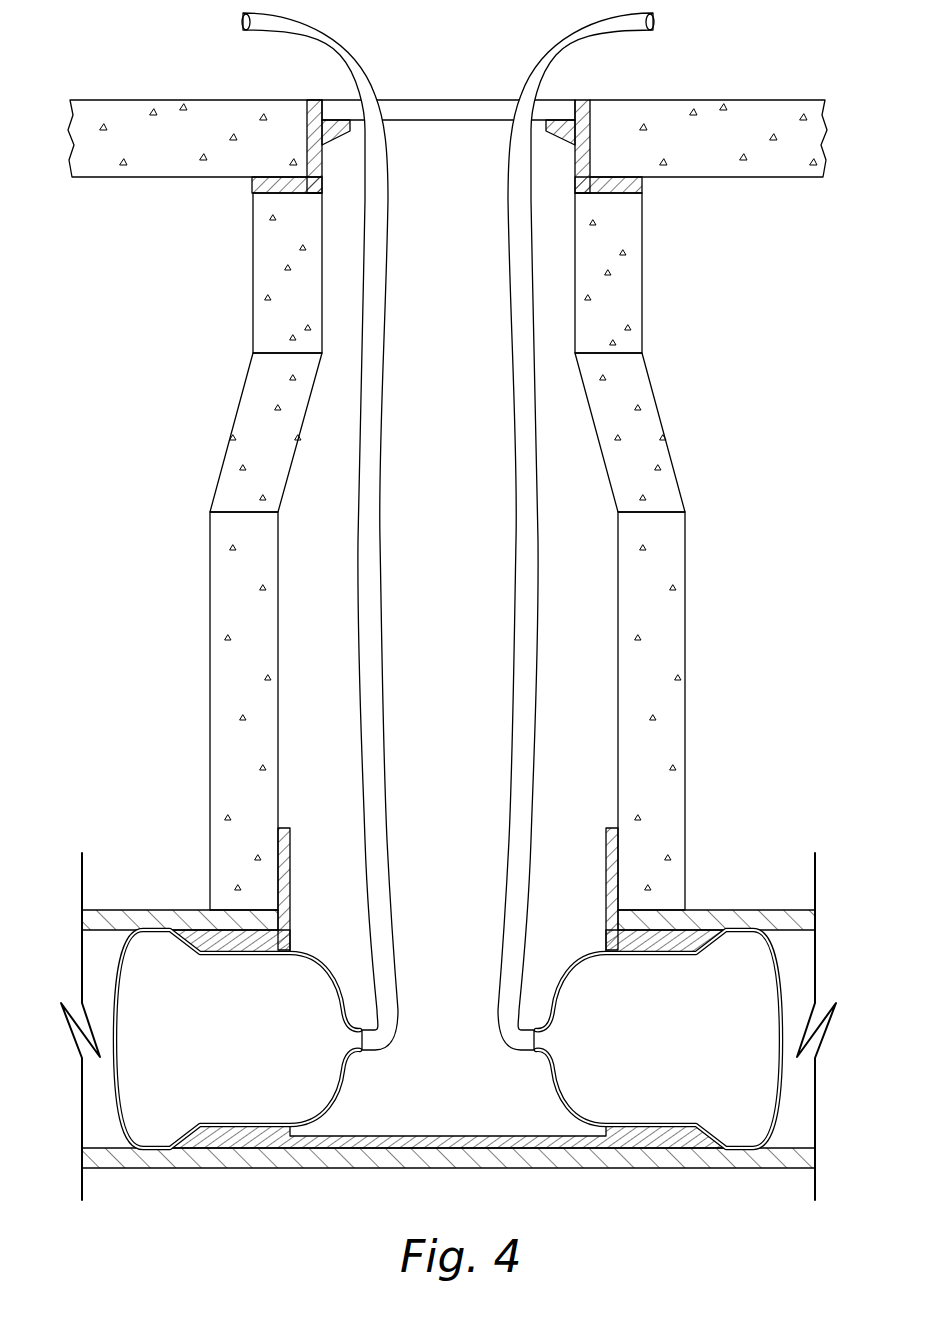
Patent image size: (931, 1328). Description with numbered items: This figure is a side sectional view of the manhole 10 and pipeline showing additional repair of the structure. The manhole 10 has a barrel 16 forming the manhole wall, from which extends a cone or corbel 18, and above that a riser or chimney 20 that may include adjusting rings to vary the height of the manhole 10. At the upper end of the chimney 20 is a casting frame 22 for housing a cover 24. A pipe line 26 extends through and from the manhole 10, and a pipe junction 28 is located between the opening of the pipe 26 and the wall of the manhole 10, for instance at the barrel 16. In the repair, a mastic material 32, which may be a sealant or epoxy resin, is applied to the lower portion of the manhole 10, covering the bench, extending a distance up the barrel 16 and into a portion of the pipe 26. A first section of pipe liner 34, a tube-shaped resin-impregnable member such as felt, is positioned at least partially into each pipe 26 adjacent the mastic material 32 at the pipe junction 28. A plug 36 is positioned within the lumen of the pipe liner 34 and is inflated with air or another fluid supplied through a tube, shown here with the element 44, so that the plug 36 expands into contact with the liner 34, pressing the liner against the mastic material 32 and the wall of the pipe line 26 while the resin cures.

The manhole 10 is at (752, 12).
The barrel 16 is at (678, 660).
The cone or corbel 18 is at (650, 412).
The riser or chimney 20 is at (628, 270).
The casting frame 22 is at (642, 181).
The cover 24 is at (340, 110).
The pipe line 26 is at (168, 910).
The pipe junction 28 is at (618, 910).
The mastic material 32 is at (290, 910).
The pipe liner 34 is at (290, 945).
The plug 36 is at (118, 1035).
The conduit 44 is at (520, 598).